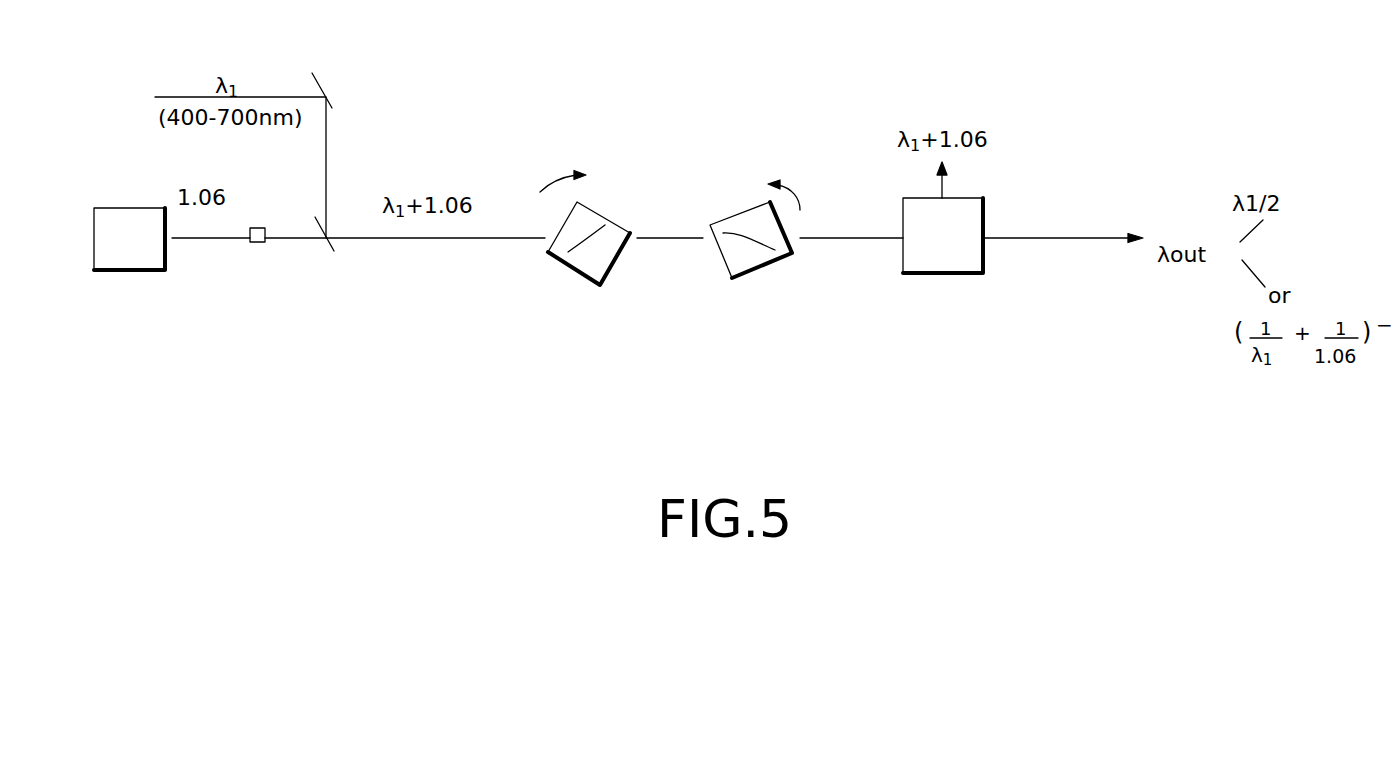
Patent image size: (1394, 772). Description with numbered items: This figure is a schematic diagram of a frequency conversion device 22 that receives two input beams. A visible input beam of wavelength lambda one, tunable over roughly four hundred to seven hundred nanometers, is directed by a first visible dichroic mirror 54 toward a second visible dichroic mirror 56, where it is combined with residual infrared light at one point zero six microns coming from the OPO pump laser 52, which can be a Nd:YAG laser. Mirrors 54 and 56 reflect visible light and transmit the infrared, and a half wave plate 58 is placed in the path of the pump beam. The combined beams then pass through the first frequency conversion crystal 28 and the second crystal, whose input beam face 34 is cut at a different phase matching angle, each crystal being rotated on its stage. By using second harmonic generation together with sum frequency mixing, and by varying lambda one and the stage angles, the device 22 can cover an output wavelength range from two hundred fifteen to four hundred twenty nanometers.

The frequency conversion device 22 is at (693, 118).
The first frequency conversion crystal 28 is at (580, 202).
The input beam face 34 is at (742, 210).
The OPO pump laser 52 is at (148, 270).
The visible dichroic mirror 54 is at (326, 97).
The visible dichroic mirror 56 is at (326, 235).
The half wave plate 58 is at (258, 228).